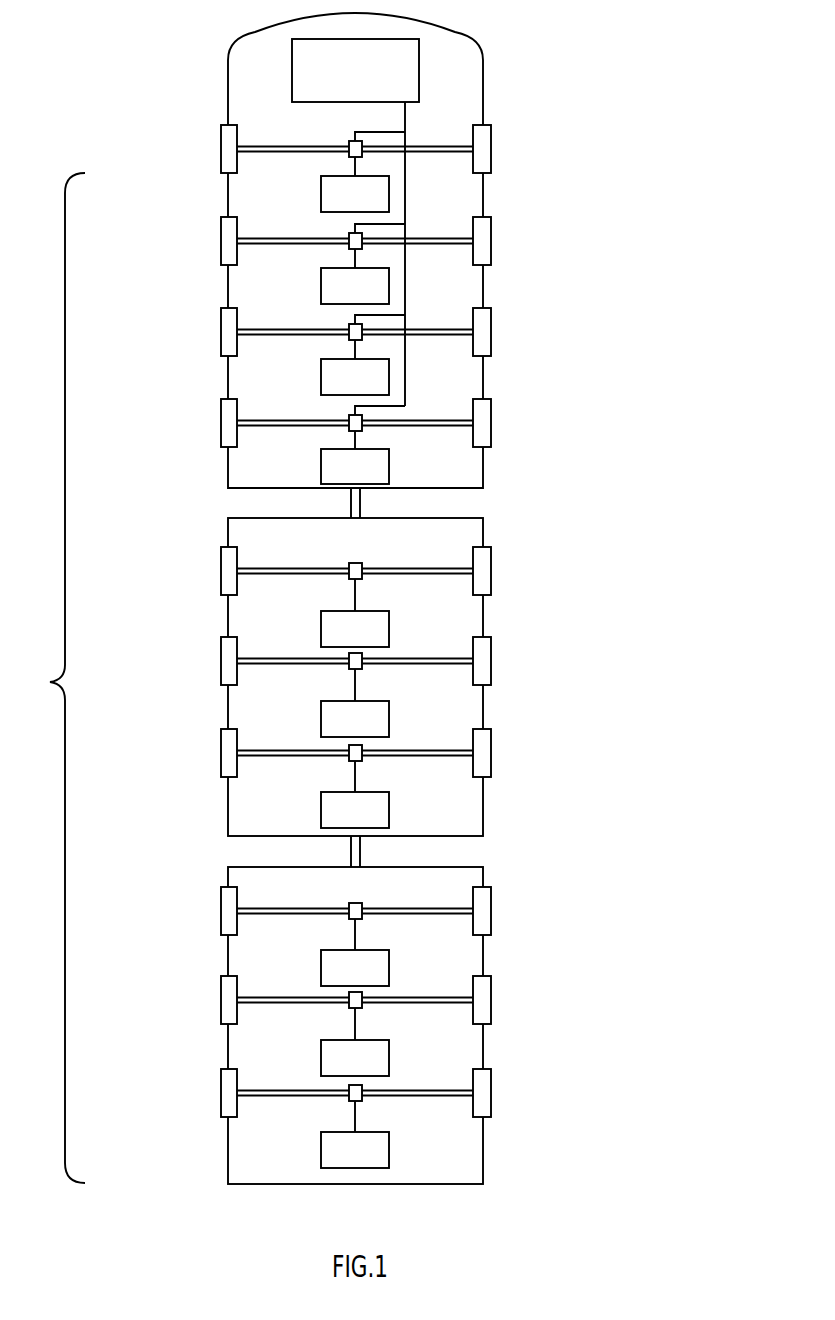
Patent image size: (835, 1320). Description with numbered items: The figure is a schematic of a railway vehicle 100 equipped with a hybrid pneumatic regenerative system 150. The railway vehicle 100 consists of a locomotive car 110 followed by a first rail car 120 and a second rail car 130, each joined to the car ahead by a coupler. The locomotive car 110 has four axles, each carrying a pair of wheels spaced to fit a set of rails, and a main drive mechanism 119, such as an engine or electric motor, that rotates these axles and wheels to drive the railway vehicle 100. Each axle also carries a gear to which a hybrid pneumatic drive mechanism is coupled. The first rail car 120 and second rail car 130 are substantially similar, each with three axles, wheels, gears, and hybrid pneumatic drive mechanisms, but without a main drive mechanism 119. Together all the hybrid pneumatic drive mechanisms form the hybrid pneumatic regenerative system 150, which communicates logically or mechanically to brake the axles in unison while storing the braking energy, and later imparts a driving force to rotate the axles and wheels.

The railway vehicle 100 is at (601, 58).
The locomotive car 110 is at (228, 70).
The main drive mechanism 119 is at (419, 72).
The first rail car 120 is at (228, 533).
The second rail car 130 is at (228, 881).
The hybrid pneumatic regenerative system 150 is at (51, 678).